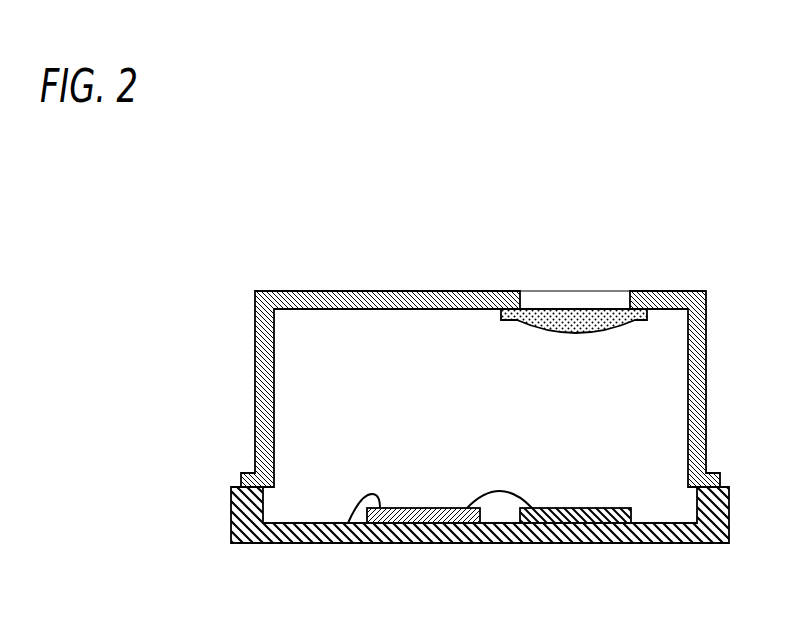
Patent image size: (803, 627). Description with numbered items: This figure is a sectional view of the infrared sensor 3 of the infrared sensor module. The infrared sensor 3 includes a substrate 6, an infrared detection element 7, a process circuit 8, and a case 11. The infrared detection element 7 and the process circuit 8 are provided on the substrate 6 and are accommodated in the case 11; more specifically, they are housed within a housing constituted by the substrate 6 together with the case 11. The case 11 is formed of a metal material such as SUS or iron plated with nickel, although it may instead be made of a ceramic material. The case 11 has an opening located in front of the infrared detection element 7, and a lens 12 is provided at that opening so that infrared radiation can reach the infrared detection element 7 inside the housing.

The infrared sensor 3 is at (181, 193).
The substrate 6 is at (302, 545).
The infrared detection element 7 is at (575, 526).
The process circuit 8 is at (420, 543).
The case 11 is at (255, 363).
The lens 12 is at (558, 308).